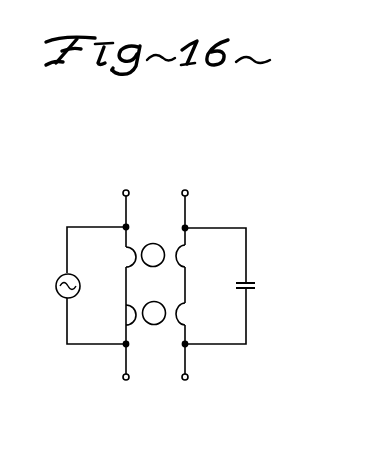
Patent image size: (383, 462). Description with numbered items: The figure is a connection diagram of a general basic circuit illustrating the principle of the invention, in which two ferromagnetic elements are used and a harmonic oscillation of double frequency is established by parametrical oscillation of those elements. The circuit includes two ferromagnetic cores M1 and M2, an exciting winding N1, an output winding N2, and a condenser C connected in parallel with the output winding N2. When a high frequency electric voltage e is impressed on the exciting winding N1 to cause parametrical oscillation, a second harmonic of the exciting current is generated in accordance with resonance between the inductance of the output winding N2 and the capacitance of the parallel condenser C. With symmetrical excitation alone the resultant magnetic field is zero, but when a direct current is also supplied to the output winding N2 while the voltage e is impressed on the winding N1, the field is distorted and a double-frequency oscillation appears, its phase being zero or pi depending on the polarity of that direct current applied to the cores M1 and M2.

The high frequency electric voltage e is at (73, 287).
The exciting winding N1 is at (120, 286).
The output winding N2 is at (192, 285).
The condenser C is at (236, 286).
The ferromagnetic core M1 is at (153, 243).
The ferromagnetic core M2 is at (154, 301).